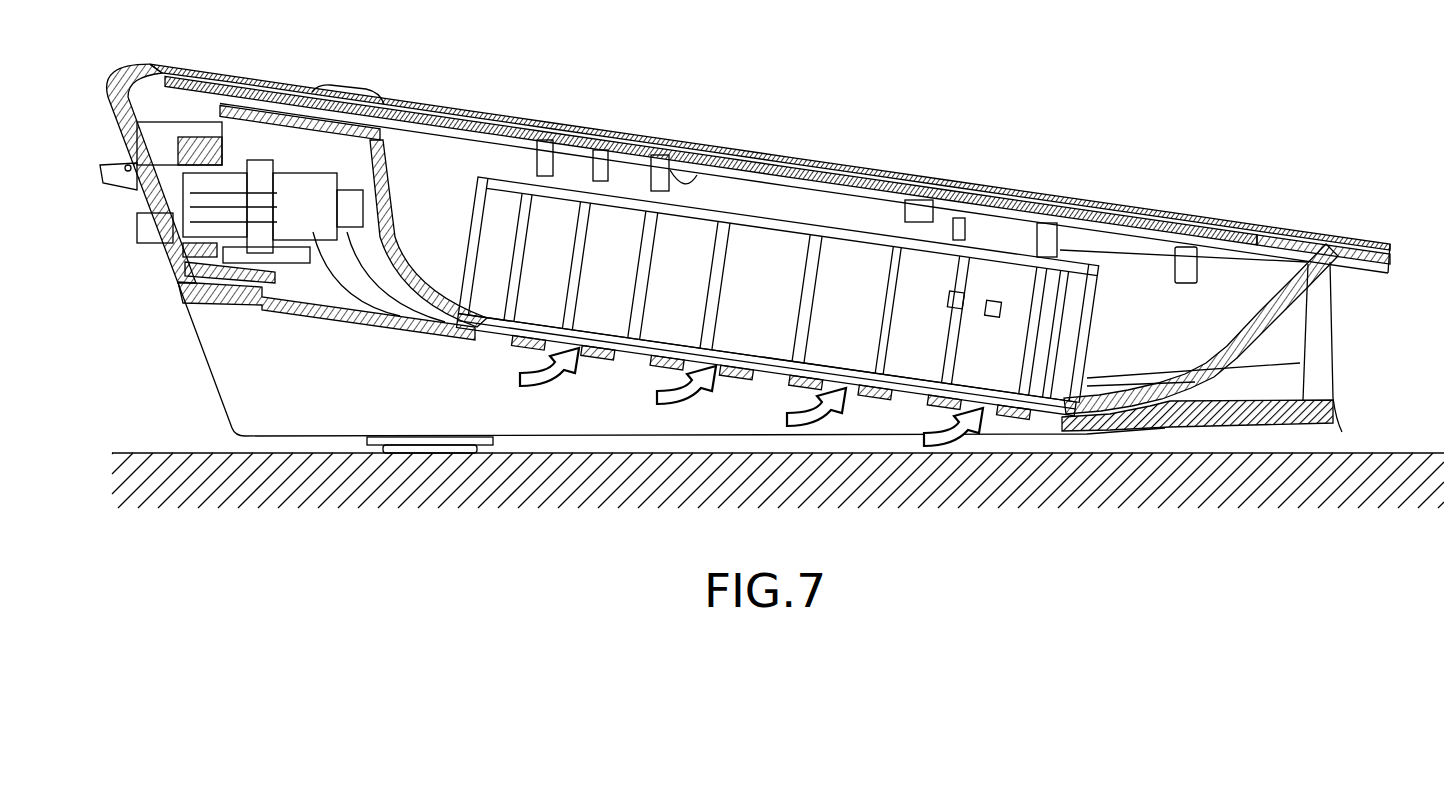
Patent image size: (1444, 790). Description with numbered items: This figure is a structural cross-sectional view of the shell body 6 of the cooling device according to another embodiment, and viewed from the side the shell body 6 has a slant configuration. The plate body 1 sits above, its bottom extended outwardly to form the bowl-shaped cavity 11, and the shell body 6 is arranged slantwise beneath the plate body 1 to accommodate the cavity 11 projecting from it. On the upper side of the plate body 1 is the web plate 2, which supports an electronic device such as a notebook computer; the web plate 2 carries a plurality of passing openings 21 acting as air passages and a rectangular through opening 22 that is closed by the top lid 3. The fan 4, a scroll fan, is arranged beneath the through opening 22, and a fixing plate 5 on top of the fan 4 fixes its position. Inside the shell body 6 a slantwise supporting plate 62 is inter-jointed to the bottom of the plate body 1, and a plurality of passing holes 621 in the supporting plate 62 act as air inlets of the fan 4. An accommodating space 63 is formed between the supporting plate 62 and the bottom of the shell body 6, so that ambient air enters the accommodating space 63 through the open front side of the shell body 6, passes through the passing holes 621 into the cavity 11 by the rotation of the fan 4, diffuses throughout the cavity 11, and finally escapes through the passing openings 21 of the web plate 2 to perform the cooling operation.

The plate body 1 is at (1289, 314).
The cavity 11 is at (1162, 310).
The web plate 2 is at (1363, 243).
The passing openings 21 is at (1323, 243).
The through opening 22 is at (1057, 223).
The top lid 3 is at (788, 158).
The fan 4 is at (487, 215).
The fixing plate 5 is at (670, 178).
The shell body 6 is at (280, 442).
The supporting plate 62 is at (243, 305).
The passing holes 621 is at (633, 357).
The accommodating space 63 is at (250, 370).